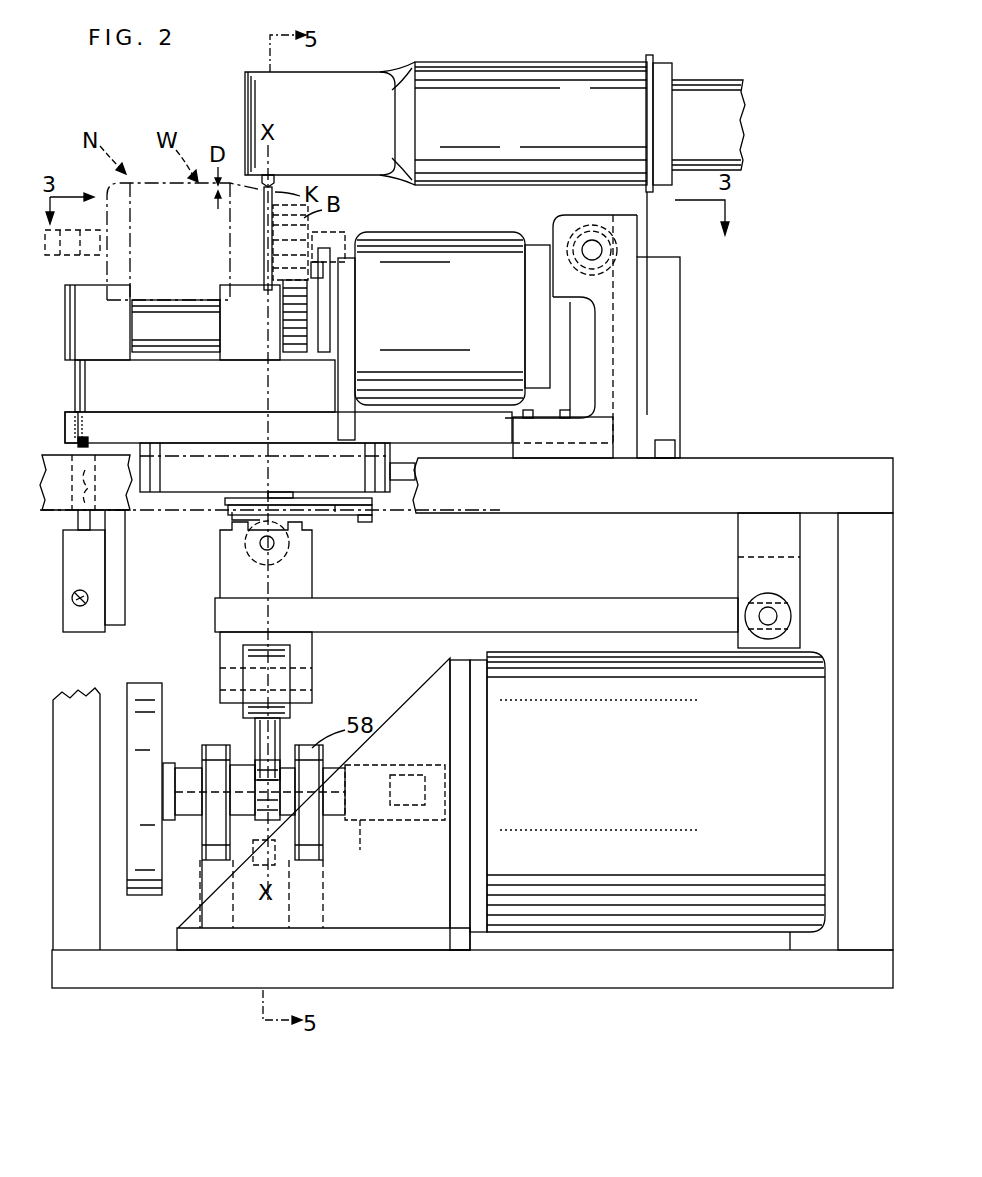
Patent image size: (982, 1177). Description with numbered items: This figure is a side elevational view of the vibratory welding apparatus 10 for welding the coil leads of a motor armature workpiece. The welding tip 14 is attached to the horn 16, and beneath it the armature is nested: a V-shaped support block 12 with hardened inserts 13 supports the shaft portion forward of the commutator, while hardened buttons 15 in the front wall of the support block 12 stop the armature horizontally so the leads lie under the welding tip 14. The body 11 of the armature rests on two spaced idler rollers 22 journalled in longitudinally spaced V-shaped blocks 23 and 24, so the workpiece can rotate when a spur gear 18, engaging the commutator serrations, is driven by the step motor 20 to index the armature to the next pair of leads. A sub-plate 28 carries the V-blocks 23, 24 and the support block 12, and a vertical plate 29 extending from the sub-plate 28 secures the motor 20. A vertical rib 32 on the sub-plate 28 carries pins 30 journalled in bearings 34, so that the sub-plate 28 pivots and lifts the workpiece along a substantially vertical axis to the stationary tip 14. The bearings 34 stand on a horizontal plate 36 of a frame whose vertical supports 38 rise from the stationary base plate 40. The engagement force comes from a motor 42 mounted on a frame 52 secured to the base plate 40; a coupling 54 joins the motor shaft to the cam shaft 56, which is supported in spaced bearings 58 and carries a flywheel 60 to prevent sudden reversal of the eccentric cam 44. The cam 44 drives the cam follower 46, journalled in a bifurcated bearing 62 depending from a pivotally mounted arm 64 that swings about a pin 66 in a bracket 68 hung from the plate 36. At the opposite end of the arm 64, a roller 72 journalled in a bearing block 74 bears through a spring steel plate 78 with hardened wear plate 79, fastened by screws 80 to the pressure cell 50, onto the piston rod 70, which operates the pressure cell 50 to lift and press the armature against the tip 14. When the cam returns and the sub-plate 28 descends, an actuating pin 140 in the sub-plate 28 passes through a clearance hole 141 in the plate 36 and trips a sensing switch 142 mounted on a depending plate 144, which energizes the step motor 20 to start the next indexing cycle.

The vibratory welding apparatus 10 is at (540, 123).
The body of the armature 11 is at (178, 255).
The V-shaped support block 12 is at (327, 296).
The hardened inserts 13 is at (325, 236).
The welding tip 14 is at (276, 177).
The hardened buttons 15 is at (322, 270).
The horn 16 is at (336, 123).
The spur gear 18 is at (297, 352).
The step motor 20 is at (459, 338).
The idler rollers 22 is at (178, 332).
The V-shaped block 23 is at (114, 338).
The V-shaped block 24 is at (257, 338).
The sub-plate 28 is at (70, 426).
The vertical plate 29 is at (345, 348).
The pins 30 is at (592, 240).
The vertical rib 32 is at (575, 330).
The bearings 34 is at (645, 342).
The horizontal plate 36 is at (725, 470).
The vertical supports 38 is at (85, 690).
The base plate 40 is at (655, 978).
The motor 42 is at (644, 785).
The eccentric cam 44 is at (272, 738).
The cam follower 46 is at (280, 663).
The pressure cell 50 is at (204, 481).
The frame 52 is at (416, 913).
The coupling 54 is at (362, 840).
The cam shaft 56 is at (355, 790).
The bearings 58 is at (216, 745).
The flywheel 60 is at (135, 816).
The bifurcated bearing 62 is at (300, 641).
The pivotally mounted arm 64 is at (567, 605).
The pin 66 is at (760, 610).
The bracket 68 is at (745, 530).
The piston rod 70 is at (285, 497).
The roller 72 is at (290, 513).
The bearing block 74 is at (300, 546).
The spring steel plate 78 is at (340, 508).
The hardened wear plate 79 is at (238, 512).
The screws 80 is at (368, 512).
The actuating pin 140 is at (78, 443).
The clearance hole 141 is at (97, 465).
The sensing switch 142 is at (72, 562).
The depending plate 144 is at (115, 562).